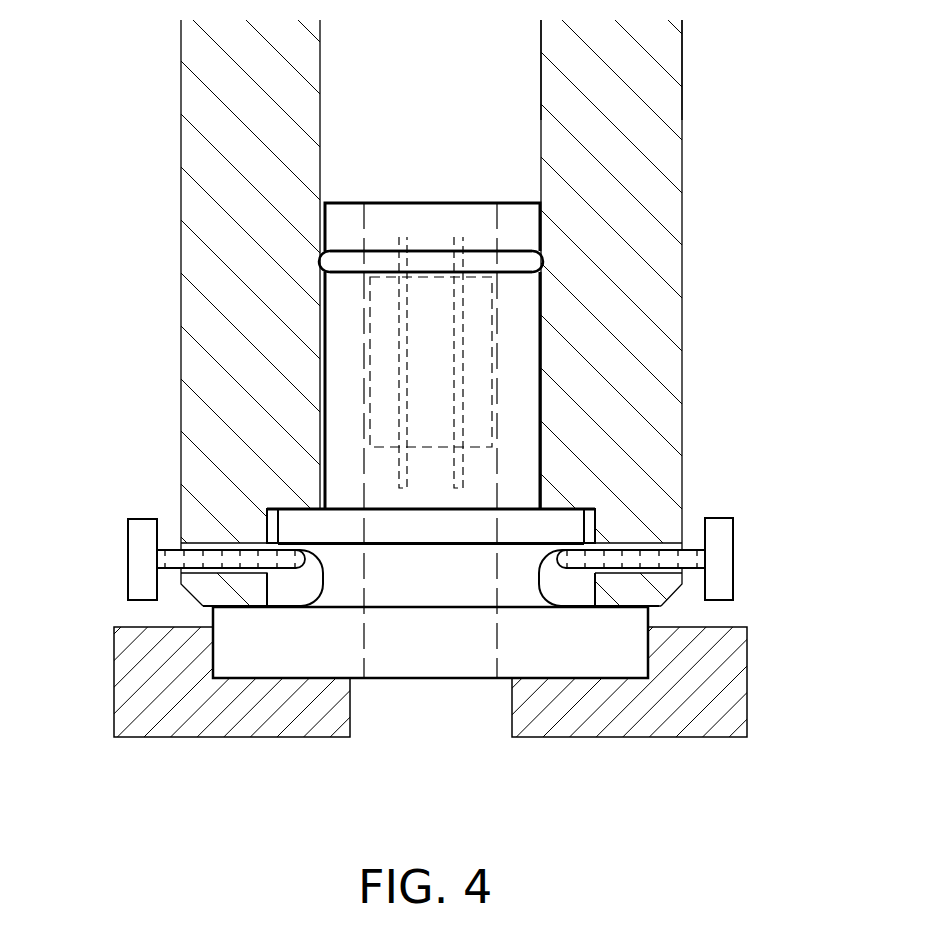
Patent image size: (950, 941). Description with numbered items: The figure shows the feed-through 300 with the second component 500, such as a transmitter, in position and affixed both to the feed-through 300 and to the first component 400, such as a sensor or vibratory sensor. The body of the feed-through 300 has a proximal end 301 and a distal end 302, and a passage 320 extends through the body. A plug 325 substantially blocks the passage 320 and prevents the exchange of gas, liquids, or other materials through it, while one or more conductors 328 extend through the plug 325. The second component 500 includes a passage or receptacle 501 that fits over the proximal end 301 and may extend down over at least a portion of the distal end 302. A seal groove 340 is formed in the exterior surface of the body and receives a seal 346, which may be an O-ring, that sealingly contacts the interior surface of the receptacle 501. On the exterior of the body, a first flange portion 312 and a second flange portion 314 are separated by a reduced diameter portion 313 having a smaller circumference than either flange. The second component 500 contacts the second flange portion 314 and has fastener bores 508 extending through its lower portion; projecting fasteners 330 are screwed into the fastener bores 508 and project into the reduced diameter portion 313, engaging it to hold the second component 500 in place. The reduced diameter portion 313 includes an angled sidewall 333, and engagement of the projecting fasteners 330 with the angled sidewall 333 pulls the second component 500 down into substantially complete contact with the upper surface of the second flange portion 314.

The feed-through 300 is at (421, 702).
The proximal end 301 is at (90, 205).
The distal end 302 is at (90, 508).
The first flange portion 312 is at (762, 508).
The reduced diameter portion 313 is at (762, 547).
The second flange portion 314 is at (762, 605).
The passage 320 is at (418, 212).
The plug 325 is at (385, 277).
The conductors 328 is at (460, 275).
The projecting fasteners 330 is at (142, 519).
The angled sidewall 333 is at (277, 520).
The seal groove 340 is at (525, 250).
The seal 346 is at (540, 263).
The first component 400 is at (748, 707).
The second component 500 is at (475, 350).
The passage or receptacle 501 is at (517, 112).
The fastener bores 508 is at (212, 543).